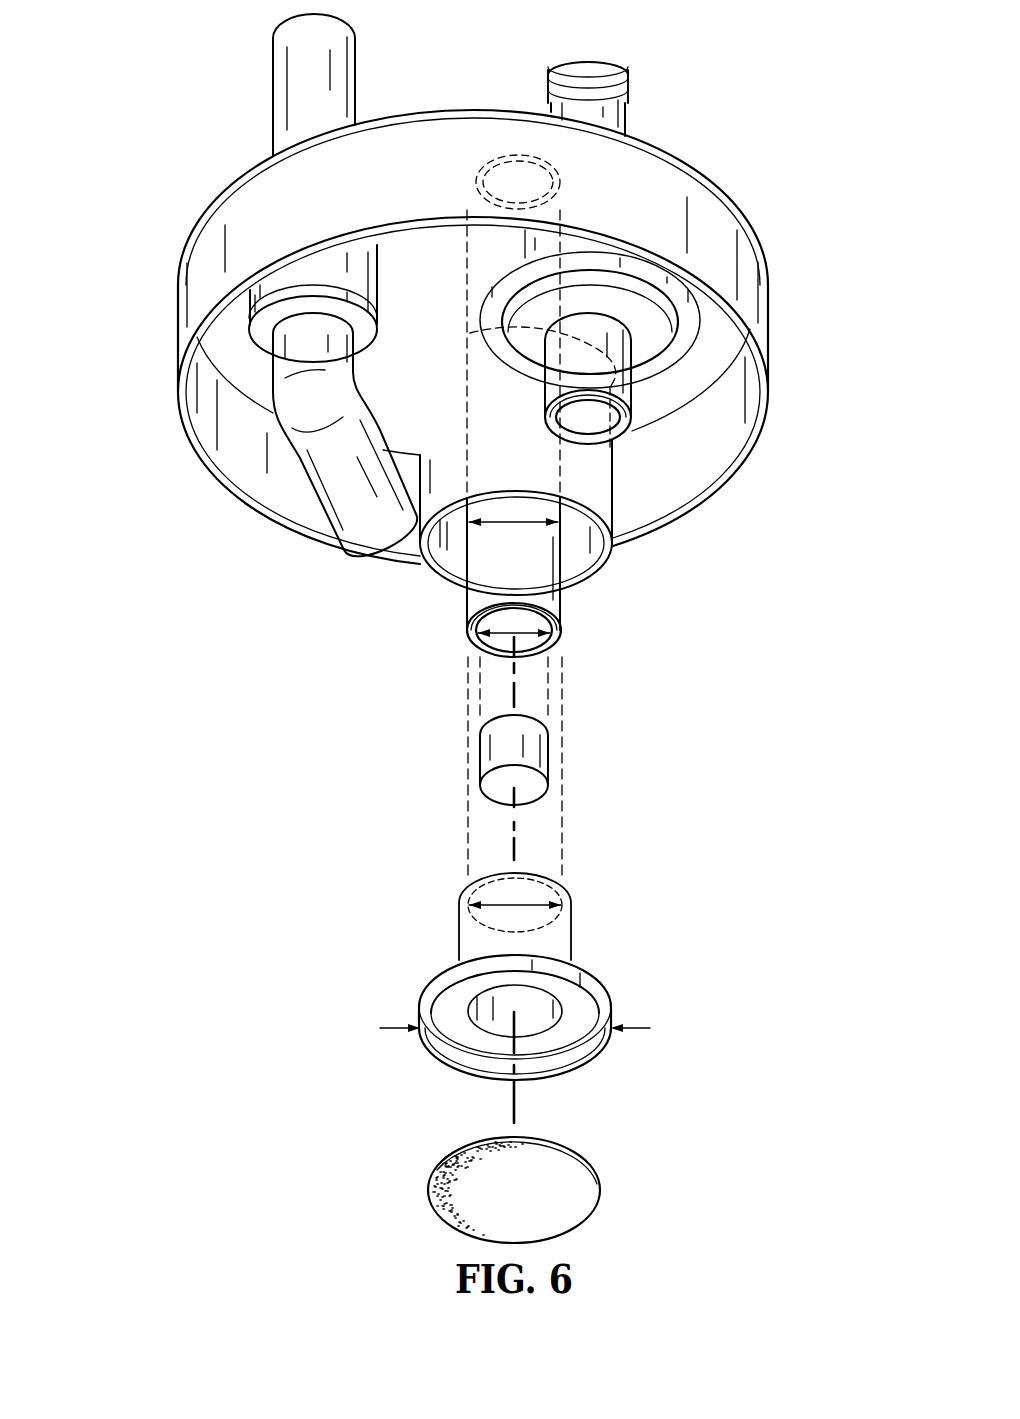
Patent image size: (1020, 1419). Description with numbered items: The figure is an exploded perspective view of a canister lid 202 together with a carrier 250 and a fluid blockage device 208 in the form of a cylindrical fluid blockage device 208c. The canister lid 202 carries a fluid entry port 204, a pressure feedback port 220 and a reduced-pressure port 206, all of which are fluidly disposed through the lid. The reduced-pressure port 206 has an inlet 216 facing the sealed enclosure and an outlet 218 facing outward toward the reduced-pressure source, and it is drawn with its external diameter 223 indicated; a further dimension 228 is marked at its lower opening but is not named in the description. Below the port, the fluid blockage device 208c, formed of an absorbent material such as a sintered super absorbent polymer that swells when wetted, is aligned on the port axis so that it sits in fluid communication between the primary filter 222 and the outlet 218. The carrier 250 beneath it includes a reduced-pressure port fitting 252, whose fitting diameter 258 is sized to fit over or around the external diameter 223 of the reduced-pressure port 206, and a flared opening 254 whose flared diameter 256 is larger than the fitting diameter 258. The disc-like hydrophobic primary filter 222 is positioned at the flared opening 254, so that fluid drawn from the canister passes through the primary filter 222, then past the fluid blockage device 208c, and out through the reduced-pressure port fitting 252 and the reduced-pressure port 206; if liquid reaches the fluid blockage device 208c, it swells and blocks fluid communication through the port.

The canister lid 202 is at (156, 140).
The fluid entry port 204 is at (272, 88).
The reduced-pressure port 206 is at (513, 544).
The fluid blockage device 208 is at (593, 760).
The fluid blockage device 208c is at (549, 752).
The inlet 216 is at (558, 648).
The outlet 218 is at (512, 158).
The pressure feedback port 220 is at (612, 66).
The primary filter 222 is at (600, 1188).
The external diameter 223 is at (518, 524).
The outlet bore diameter 228 is at (506, 636).
The carrier 250 is at (537, 983).
The reduced-pressure port fitting 252 is at (572, 905).
The flared opening 254 is at (596, 1014).
The flared diameter 256 is at (394, 1029).
The fitting diameter 258 is at (503, 908).